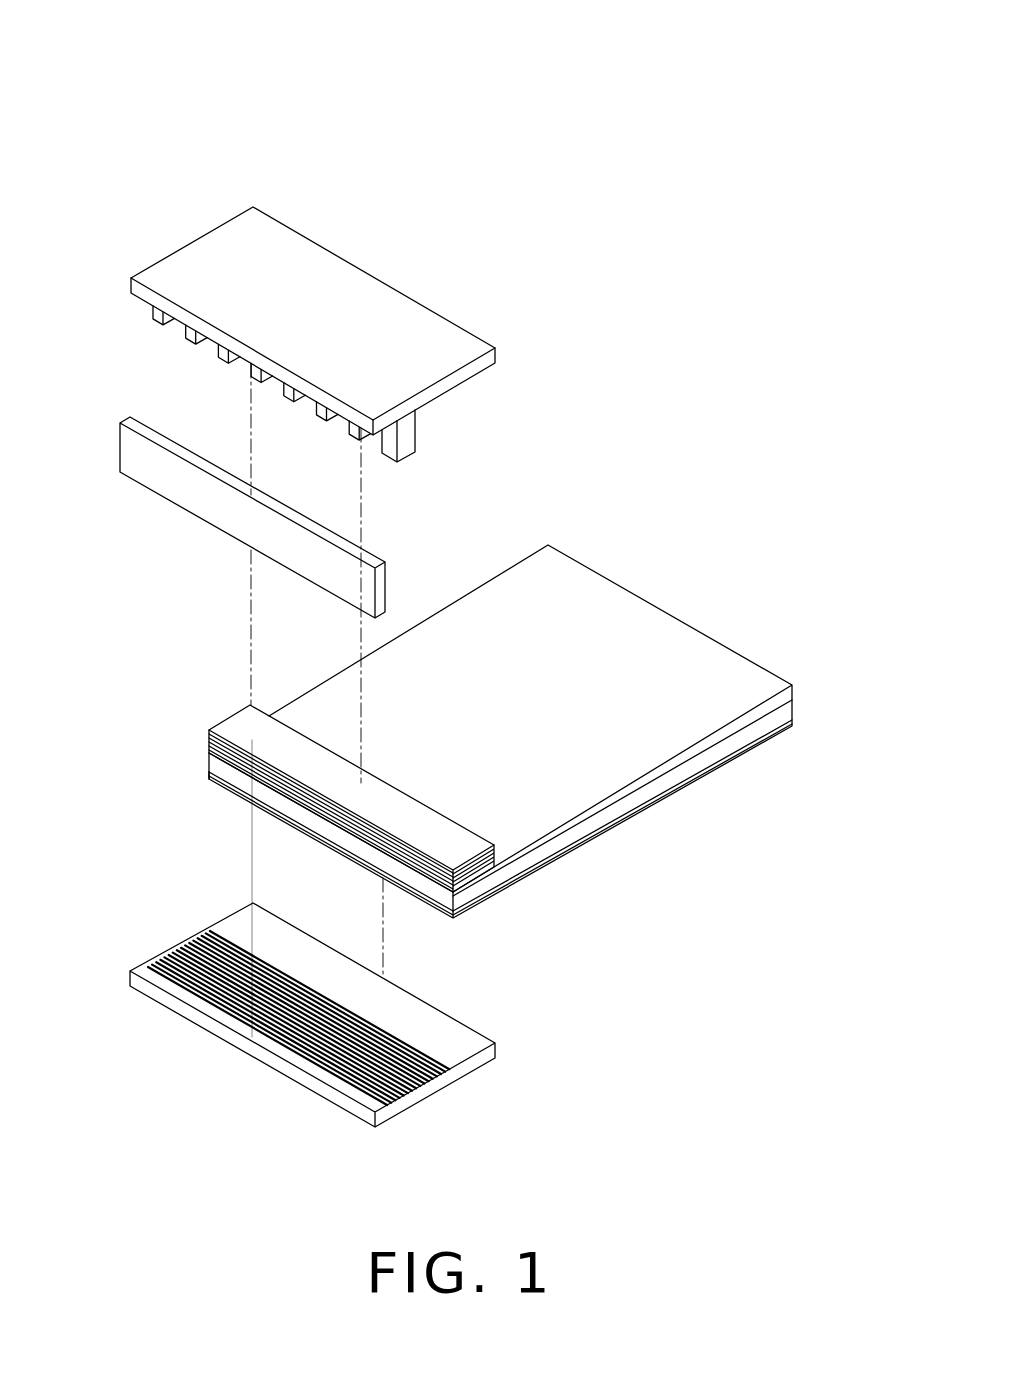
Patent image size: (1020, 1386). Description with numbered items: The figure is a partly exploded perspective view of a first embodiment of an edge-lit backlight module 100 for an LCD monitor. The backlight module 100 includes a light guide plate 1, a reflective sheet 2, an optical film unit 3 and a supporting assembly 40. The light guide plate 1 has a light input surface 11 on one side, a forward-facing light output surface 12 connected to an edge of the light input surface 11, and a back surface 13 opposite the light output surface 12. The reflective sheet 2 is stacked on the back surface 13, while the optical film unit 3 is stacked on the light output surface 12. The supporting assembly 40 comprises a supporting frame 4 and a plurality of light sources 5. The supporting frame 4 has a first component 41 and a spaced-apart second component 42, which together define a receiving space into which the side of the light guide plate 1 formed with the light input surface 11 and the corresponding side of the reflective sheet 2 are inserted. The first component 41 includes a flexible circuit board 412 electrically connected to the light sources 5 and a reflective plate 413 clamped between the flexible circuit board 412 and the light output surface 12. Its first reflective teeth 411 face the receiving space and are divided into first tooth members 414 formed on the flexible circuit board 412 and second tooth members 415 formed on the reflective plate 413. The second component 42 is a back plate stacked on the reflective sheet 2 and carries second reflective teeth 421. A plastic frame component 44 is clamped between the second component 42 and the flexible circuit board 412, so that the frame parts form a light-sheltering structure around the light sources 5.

The backlight module 100 is at (142, 38).
The supporting assembly 40 is at (99, 427).
The first component 41 is at (175, 236).
The flexible circuit board 412 is at (355, 298).
The first reflective teeth 411 is at (425, 392).
The light sources 5 is at (232, 362).
The first tooth members 414 is at (437, 394).
The plastic frame component 44 is at (203, 489).
The reflective plate 413 is at (288, 742).
The second tooth members 415 is at (452, 868).
The optical film unit 3 is at (725, 697).
The light output surface 12 is at (690, 762).
The reflective sheet 2 is at (612, 826).
The back surface 13 is at (590, 846).
The light guide plate 1 is at (558, 855).
The light input surface 11 is at (235, 778).
The supporting frame 4 is at (184, 1036).
The second component 42 is at (486, 1054).
The second reflective teeth 421 is at (425, 1090).